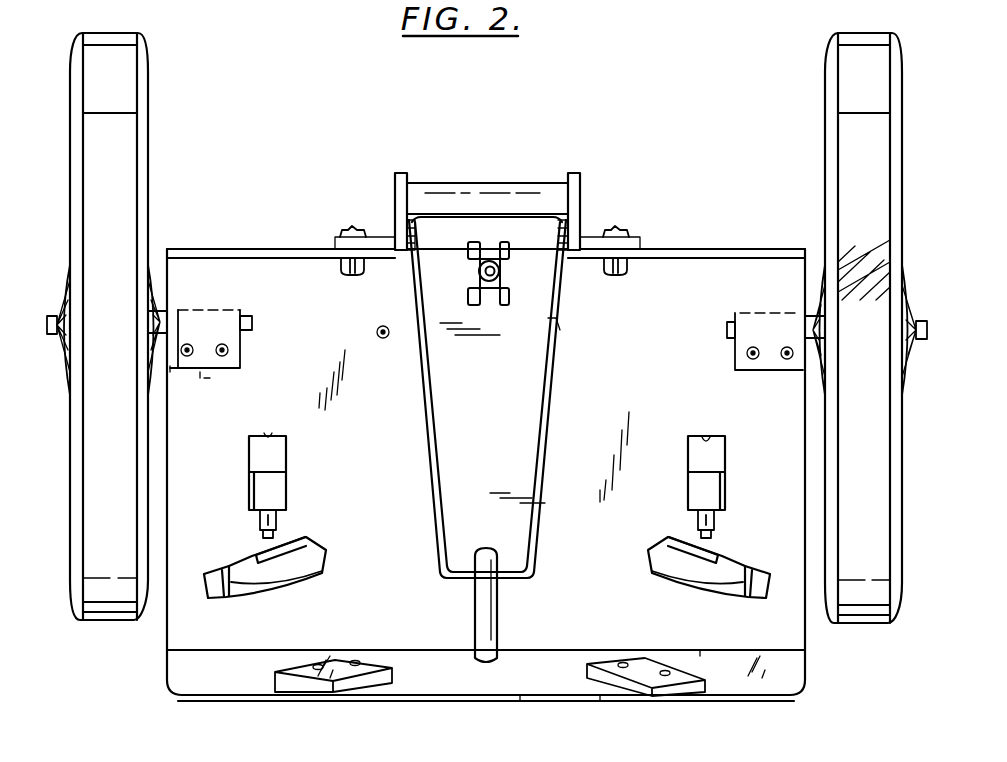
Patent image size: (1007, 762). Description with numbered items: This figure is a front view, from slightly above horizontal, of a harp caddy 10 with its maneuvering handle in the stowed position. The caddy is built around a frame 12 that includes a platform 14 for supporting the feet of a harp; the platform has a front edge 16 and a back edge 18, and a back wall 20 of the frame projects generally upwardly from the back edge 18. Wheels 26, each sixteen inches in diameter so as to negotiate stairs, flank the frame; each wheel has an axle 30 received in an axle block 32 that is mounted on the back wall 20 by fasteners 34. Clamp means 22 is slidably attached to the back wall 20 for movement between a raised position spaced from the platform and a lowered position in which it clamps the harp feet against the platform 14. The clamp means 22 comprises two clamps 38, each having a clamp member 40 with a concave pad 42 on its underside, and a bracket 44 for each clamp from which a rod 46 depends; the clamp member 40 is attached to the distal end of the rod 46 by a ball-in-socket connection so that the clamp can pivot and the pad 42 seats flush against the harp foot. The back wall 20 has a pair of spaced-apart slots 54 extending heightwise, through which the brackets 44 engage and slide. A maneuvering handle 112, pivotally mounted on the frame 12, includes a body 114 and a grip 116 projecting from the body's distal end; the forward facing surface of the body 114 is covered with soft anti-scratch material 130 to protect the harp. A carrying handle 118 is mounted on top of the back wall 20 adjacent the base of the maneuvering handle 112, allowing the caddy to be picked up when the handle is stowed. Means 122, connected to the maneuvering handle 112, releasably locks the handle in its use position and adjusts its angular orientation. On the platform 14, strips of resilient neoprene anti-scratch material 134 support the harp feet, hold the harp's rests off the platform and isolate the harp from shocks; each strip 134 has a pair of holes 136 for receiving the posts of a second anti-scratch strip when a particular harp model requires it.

The harp caddy 10 is at (650, 120).
The frame 12 is at (262, 247).
The platform 14 is at (532, 692).
The front edge 16 is at (593, 703).
The back edge 18 is at (681, 652).
The back wall 20 is at (690, 258).
The clamp means 22 is at (311, 502).
The wheels 26 is at (109, 621).
The axle 30 is at (257, 322).
The axle block 32 is at (206, 372).
The fasteners 34 is at (225, 344).
The clamps 38 is at (327, 550).
The clamp member 40 is at (221, 565).
The pad 42 is at (681, 579).
The bracket 44 is at (255, 496).
The rod 46 is at (277, 528).
The slots 54 is at (264, 437).
The maneuvering handle 112 is at (416, 385).
The body 114 is at (547, 420).
The grip 116 is at (498, 632).
The carrying handle 118 is at (488, 184).
The locking and adjusting means 122 is at (506, 278).
The anti-scratch material 130 is at (561, 374).
The resilient anti-scratch material strips 134 is at (311, 694).
The holes 136 is at (339, 663).